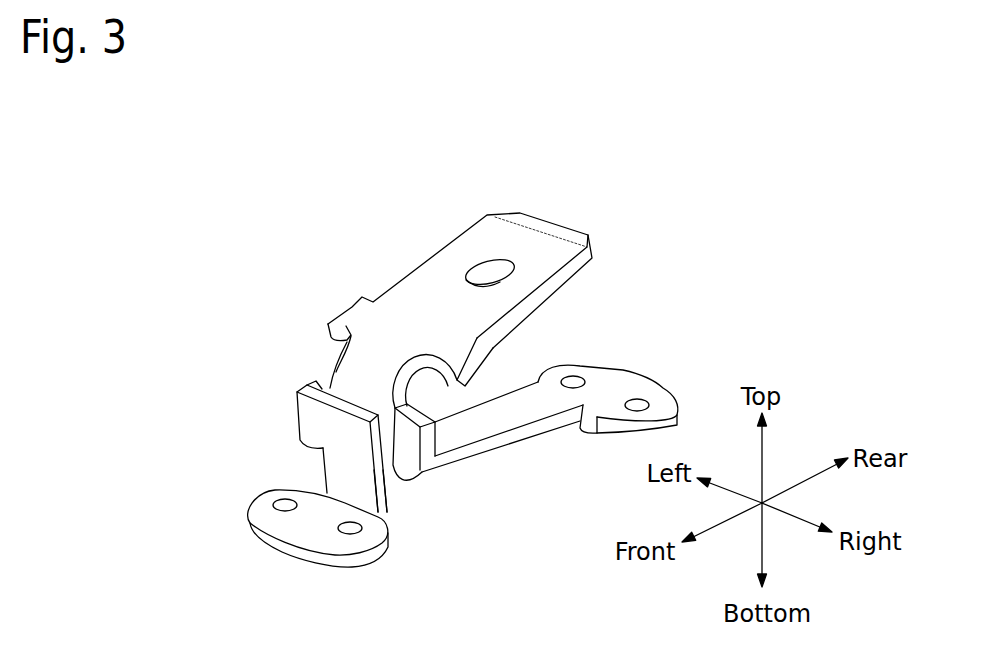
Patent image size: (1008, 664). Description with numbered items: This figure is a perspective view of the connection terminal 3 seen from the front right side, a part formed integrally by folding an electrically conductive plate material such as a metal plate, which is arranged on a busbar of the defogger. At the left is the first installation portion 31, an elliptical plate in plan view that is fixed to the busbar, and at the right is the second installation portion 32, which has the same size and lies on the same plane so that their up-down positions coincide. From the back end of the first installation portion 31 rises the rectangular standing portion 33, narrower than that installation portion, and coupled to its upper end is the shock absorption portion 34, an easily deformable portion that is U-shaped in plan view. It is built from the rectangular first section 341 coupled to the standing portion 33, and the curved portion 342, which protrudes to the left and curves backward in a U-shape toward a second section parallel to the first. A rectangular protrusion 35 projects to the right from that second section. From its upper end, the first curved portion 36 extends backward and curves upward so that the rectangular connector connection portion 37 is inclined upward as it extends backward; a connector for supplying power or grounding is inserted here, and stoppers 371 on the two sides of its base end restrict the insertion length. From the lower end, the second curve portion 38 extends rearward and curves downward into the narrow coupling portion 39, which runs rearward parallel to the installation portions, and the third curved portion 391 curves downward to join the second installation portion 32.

The connection terminal 3 is at (345, 190).
The first installation portion 31 is at (316, 533).
The second installation portion 32 is at (613, 380).
The standing portion 33 is at (357, 487).
The shock absorption portion 34 is at (256, 417).
The first section 341 is at (343, 430).
The curved portion 342 is at (307, 383).
The protrusion 35 is at (423, 443).
The first curved portion 36 is at (358, 372).
The connector connection portion 37 is at (465, 247).
The stopper 371 is at (353, 311).
The second curve portion 38 is at (405, 475).
The coupling portion 39 is at (513, 437).
The third curved portion 391 is at (583, 407).